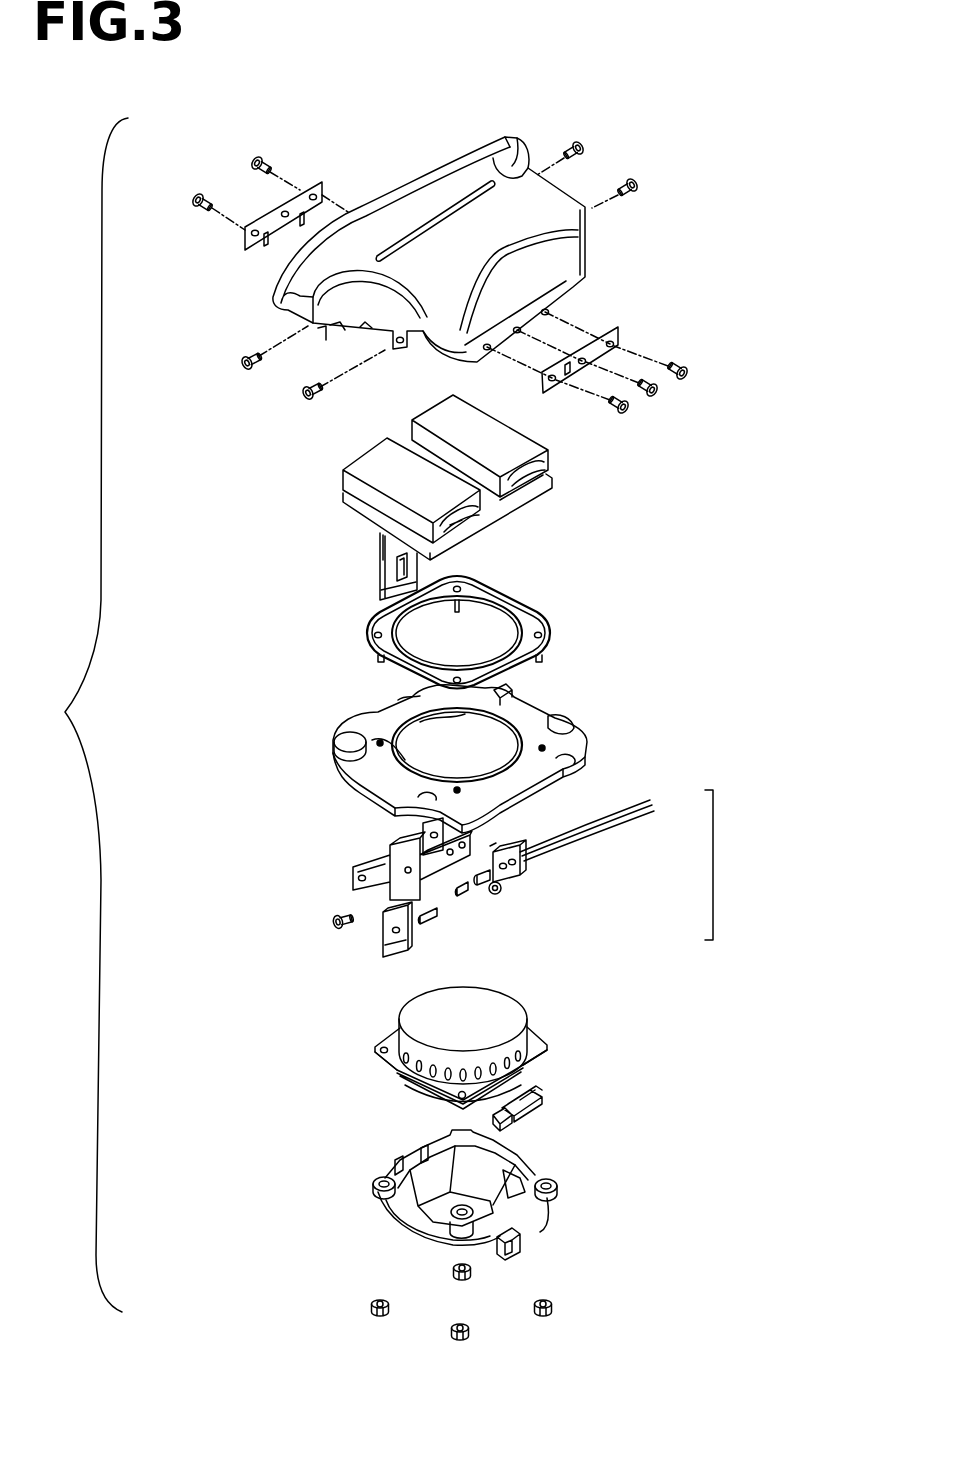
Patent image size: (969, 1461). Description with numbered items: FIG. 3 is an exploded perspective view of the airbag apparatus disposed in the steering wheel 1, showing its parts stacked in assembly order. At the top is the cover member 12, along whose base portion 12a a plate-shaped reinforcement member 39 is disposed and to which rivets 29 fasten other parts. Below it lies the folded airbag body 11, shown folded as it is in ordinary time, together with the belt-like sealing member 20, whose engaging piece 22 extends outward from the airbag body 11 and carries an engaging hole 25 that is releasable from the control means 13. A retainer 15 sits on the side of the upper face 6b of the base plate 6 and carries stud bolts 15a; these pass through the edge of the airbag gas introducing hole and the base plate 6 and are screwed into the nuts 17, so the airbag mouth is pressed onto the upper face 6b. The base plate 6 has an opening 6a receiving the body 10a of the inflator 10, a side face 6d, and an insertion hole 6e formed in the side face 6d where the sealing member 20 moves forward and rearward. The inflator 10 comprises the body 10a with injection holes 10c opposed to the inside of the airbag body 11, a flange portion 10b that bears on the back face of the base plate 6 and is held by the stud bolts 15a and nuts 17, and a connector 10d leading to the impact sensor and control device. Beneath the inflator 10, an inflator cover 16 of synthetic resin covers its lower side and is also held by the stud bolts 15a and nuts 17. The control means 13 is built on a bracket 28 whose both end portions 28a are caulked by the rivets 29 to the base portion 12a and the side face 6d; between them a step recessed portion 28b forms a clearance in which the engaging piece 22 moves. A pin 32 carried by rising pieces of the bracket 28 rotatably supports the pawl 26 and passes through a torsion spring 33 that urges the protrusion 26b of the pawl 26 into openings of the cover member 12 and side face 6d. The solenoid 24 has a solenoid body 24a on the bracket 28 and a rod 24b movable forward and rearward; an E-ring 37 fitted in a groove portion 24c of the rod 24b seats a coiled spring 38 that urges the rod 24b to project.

The steering wheel 1 is at (762, 352).
The base plate 6 is at (550, 712).
The opening 6a is at (514, 690).
The upper face 6b is at (336, 742).
The side face 6d is at (576, 762).
The insertion hole 6e is at (400, 702).
The inflator 10 is at (575, 1052).
The body 10a is at (540, 1010).
The flange portion 10b is at (384, 1058).
The injection holes 10c is at (410, 1077).
The connector 10d is at (545, 1115).
The airbag body 11 is at (566, 458).
The cover member 12 is at (513, 128).
The base portion 12a is at (437, 348).
The control means 13 is at (733, 865).
The retainer 15 is at (560, 585).
The stud bolts 15a is at (546, 635).
The inflator cover 16 is at (552, 1215).
The nuts 17 is at (548, 1300).
The sealing member 20 is at (370, 568).
The engaging piece 22 is at (379, 587).
The solenoid 24 is at (530, 880).
The solenoid body 24a is at (522, 870).
The rod 24b is at (562, 852).
The groove portion 24c is at (492, 845).
The engaging hole 25 is at (384, 540).
The pawl 26 is at (412, 940).
The protrusion 26b is at (388, 952).
The bracket 28 is at (352, 883).
The end portions 28a is at (357, 870).
The step recessed portion 28b is at (392, 858).
The rivets 29 is at (253, 160).
The pin 32 is at (326, 920).
The torsion spring 33 is at (425, 912).
The E-ring 37 is at (503, 889).
The coiled spring 38 is at (470, 892).
The reinforcement member 39 is at (315, 182).